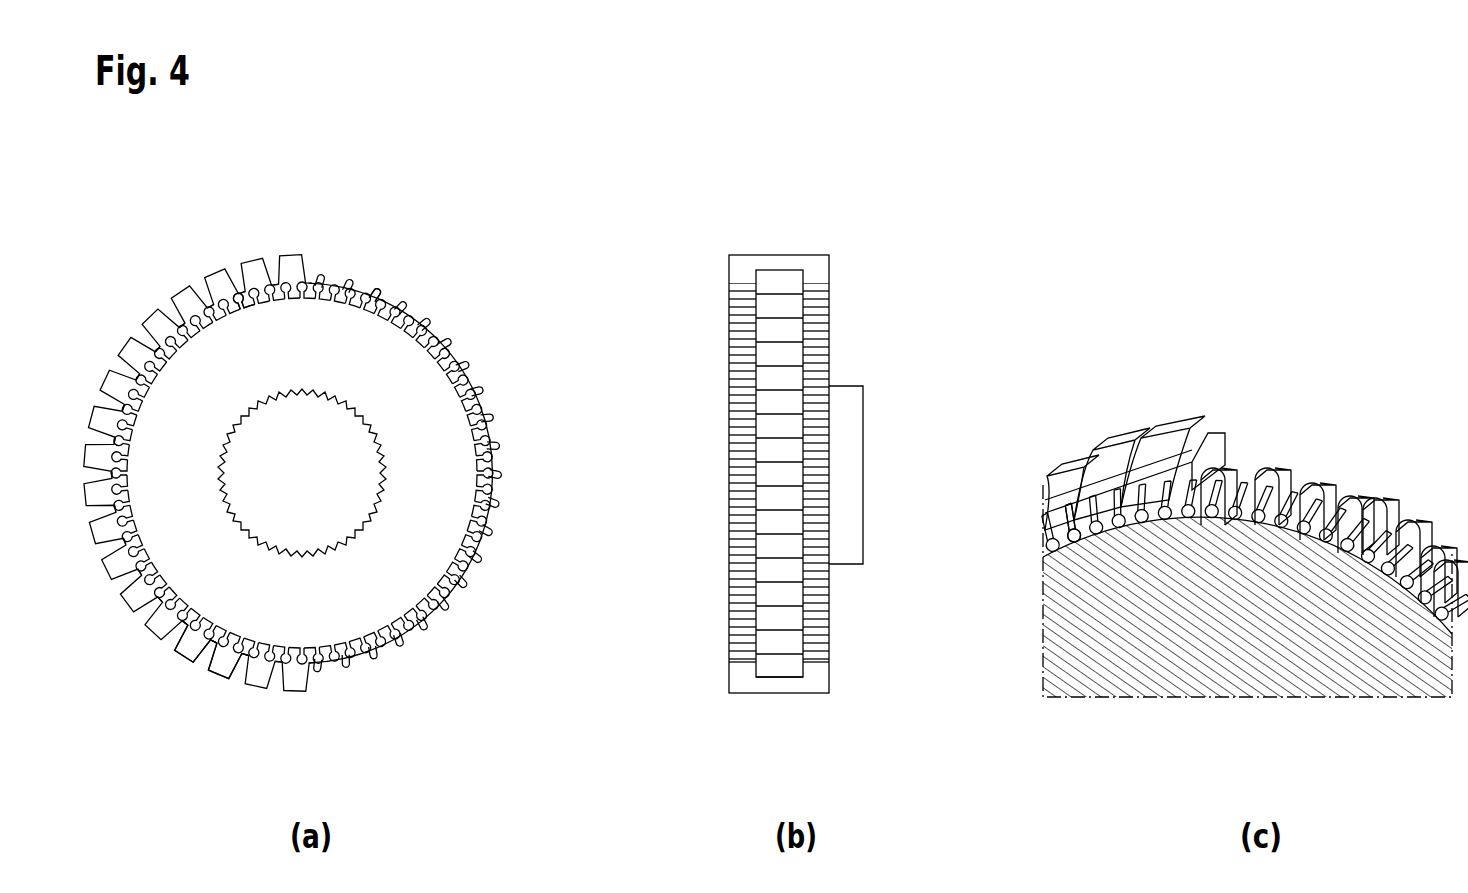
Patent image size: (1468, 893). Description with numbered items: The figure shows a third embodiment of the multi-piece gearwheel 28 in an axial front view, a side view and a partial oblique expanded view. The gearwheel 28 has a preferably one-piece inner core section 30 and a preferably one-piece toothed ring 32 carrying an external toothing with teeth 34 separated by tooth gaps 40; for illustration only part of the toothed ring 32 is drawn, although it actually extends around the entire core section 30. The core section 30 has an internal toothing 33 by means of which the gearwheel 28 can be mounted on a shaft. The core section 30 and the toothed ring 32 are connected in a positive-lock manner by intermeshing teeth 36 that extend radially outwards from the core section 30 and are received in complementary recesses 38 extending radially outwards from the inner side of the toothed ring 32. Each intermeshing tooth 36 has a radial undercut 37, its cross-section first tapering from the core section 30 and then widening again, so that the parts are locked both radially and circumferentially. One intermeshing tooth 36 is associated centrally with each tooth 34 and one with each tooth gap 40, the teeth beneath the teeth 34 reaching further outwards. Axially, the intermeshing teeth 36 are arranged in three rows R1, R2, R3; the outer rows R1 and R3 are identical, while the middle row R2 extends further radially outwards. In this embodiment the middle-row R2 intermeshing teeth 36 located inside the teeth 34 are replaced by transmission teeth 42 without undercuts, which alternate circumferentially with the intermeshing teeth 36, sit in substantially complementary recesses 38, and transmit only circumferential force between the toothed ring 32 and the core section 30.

The multi-piece gearwheel 28 is at (382, 247).
The core section 30 is at (192, 384).
The toothed ring 32 is at (203, 647).
The internal toothing 33 is at (353, 533).
The teeth 34 is at (205, 281).
The intermeshing teeth 36 is at (458, 372).
The undercut 37 is at (483, 413).
The recesses 38 is at (272, 283).
The tooth gap 40 is at (147, 607).
The transmission teeth 42 is at (437, 330).
The first row R1 is at (737, 672).
The middle row R2 is at (777, 682).
The third row R3 is at (817, 672).